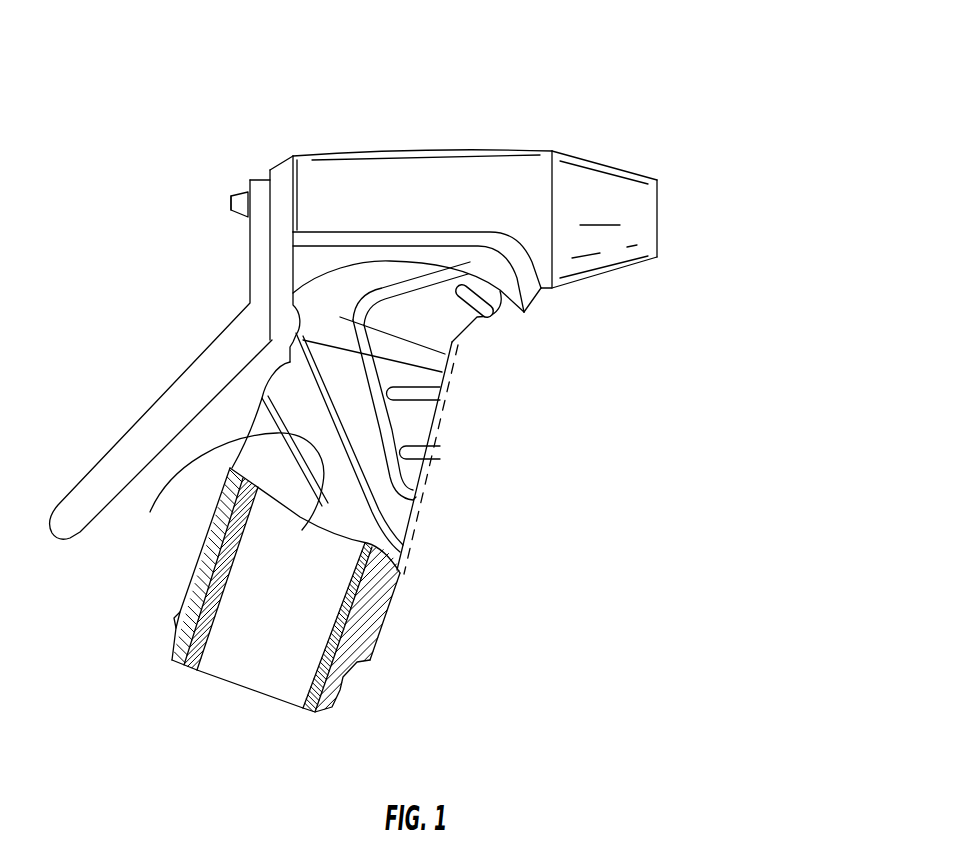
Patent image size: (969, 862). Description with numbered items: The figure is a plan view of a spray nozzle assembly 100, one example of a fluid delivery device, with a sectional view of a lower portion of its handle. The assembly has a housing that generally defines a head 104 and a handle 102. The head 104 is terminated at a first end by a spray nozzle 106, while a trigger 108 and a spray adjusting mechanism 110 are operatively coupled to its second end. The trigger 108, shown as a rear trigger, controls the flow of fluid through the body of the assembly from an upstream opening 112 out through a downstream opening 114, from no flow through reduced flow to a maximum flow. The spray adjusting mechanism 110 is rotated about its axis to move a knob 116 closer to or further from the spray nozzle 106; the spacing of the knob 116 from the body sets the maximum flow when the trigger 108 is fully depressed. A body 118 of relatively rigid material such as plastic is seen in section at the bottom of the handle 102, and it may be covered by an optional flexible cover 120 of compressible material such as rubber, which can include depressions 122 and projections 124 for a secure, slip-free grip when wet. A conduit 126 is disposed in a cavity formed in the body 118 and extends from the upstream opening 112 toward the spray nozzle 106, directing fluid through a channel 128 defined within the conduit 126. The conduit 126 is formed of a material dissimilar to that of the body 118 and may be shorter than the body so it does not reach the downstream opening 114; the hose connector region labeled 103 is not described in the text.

The spray nozzle assembly 100 is at (502, 207).
The handle 102 is at (389, 452).
The hose connector 103 is at (230, 632).
The head 104 is at (567, 302).
The spray nozzle 106 is at (617, 189).
The trigger 108 is at (110, 478).
The spray adjusting mechanism 110 is at (203, 202).
The upstream opening 112 is at (242, 708).
The downstream opening 114 is at (686, 250).
The knob 116 is at (243, 197).
The body 118 is at (172, 636).
The flexible cover 120 is at (449, 425).
The depressions 122 is at (477, 317).
The projections 124 is at (250, 447).
The conduit 126 is at (186, 668).
The channel 128 is at (315, 654).